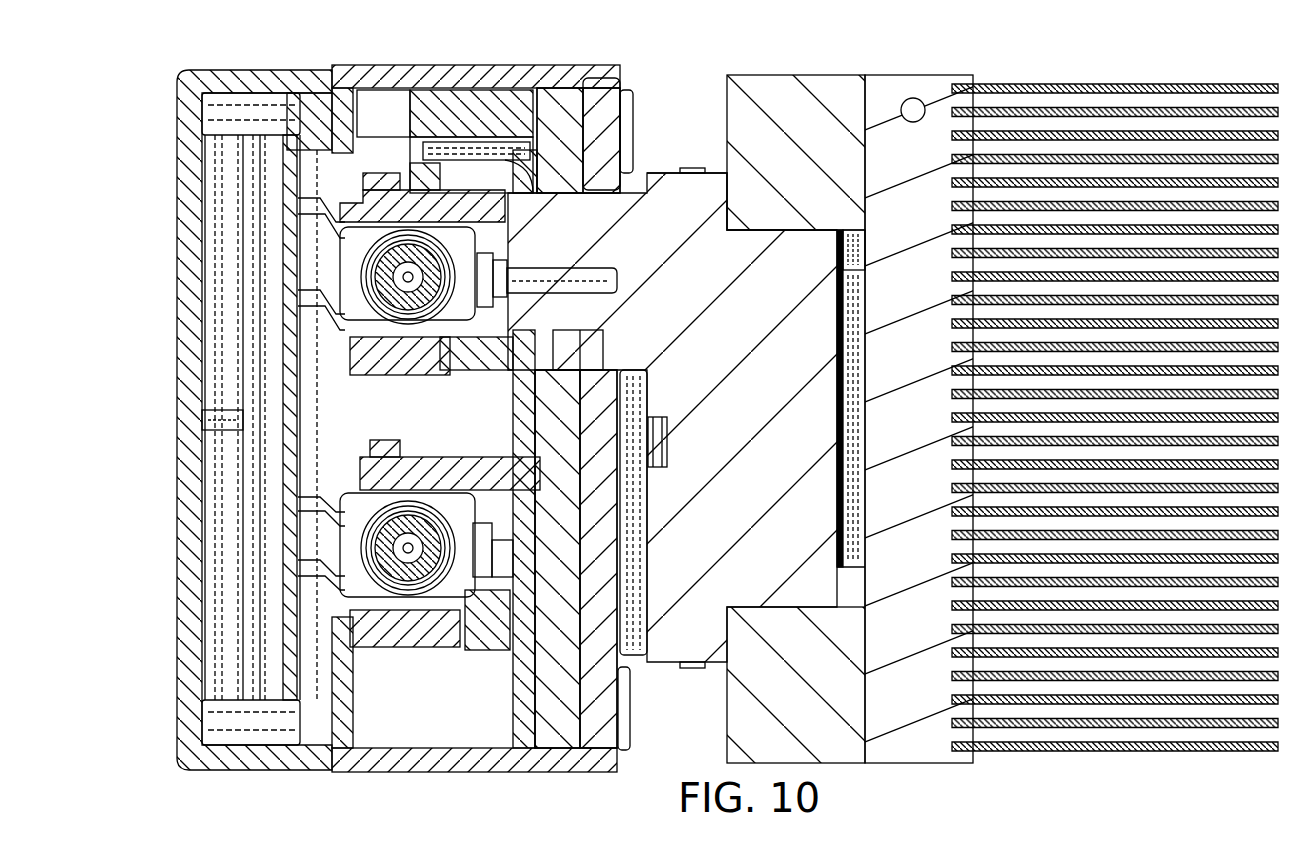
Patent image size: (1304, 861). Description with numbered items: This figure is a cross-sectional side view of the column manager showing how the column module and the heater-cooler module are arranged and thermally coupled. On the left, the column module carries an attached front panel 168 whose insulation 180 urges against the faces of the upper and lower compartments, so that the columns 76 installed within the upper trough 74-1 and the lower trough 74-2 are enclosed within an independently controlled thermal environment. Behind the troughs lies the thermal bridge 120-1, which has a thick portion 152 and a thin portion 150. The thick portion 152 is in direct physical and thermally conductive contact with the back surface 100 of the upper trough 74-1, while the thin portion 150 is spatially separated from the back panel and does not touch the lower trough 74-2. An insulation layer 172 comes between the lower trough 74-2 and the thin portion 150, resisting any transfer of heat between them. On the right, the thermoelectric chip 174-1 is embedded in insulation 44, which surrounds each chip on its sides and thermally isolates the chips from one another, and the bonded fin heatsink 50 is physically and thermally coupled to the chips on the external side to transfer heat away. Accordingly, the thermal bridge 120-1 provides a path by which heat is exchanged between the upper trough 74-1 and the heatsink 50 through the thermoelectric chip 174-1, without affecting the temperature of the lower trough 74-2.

The front panel 168 is at (186, 164).
The insulation 180 is at (269, 190).
The column 76 is at (408, 277).
The upper trough 74-1 is at (465, 283).
The lower trough 74-2 is at (470, 600).
The back surface 100 is at (484, 228).
The thick portion 152 is at (566, 264).
The insulation layer 172 is at (565, 698).
The thin portion 150 is at (704, 566).
The thermal bridge 120-1 is at (765, 419).
The thermoelectric chip 174-1 is at (850, 418).
The insulation 44 is at (795, 173).
The heatsink 50 is at (912, 358).